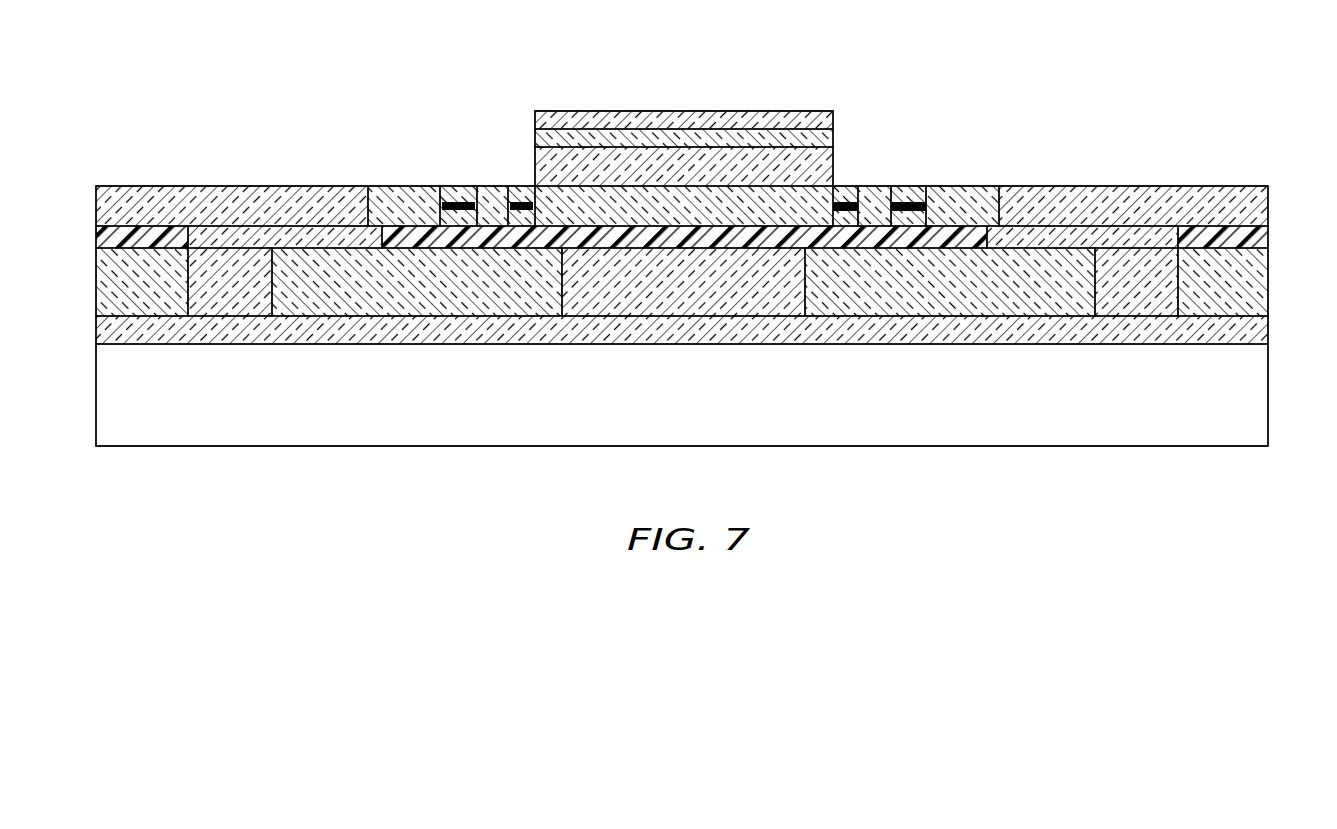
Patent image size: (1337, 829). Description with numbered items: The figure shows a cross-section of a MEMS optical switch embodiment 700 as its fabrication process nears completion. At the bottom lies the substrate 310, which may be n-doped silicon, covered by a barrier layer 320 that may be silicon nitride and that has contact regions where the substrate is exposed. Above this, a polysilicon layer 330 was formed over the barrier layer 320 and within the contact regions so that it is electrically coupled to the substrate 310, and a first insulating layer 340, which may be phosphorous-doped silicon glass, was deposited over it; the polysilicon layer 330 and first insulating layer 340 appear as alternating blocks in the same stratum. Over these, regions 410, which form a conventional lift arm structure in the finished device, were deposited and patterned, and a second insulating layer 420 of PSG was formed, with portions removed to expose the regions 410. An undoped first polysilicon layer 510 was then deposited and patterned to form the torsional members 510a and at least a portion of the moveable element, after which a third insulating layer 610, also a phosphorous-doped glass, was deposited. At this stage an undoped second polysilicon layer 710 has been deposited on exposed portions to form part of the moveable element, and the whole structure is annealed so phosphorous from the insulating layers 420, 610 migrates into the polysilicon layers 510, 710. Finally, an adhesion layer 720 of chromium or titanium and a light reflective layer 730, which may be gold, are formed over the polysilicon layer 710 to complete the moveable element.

The embodiment of the present invention nearing completion 700 is at (188, 73).
The substrate 310 is at (698, 413).
The barrier layer 320 is at (1257, 328).
The polysilicon layer 330 is at (247, 302).
The first insulating layer 340 is at (108, 280).
The regions 410 is at (300, 230).
The second insulating layer 420 is at (105, 235).
The undoped polysilicon layer (poly-1) 510 is at (398, 196).
The torsional members 510a is at (462, 200).
The third insulating layer 610 is at (1260, 205).
The undoped polysilicon layer (poly-2) 710 is at (827, 167).
The adhesion layer 720 is at (827, 140).
The light reflective layer 730 is at (834, 111).